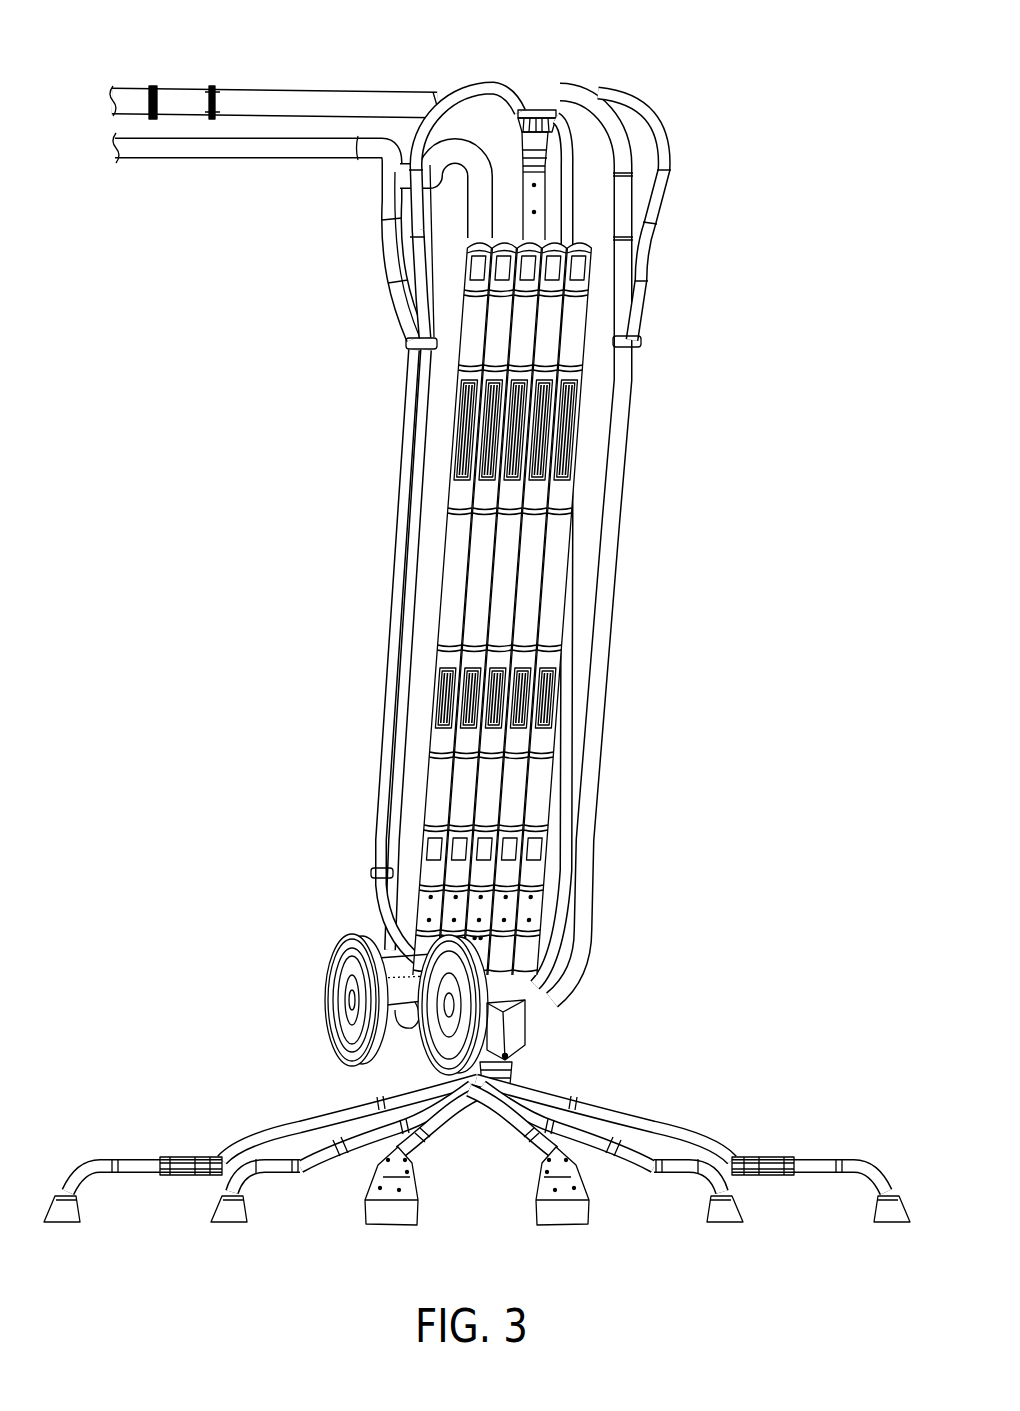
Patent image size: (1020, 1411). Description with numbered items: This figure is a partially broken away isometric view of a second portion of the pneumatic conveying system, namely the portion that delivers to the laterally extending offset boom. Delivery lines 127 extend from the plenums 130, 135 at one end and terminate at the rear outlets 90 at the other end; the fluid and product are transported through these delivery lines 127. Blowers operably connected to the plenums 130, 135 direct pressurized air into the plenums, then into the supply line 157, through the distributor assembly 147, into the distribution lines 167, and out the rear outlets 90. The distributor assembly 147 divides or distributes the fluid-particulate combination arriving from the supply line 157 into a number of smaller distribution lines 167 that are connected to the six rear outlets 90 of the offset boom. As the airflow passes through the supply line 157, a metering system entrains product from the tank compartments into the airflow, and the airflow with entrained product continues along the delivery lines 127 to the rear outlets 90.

The delivery lines 127 is at (550, 84).
The supply line 157 is at (480, 905).
The plenum 135 is at (413, 973).
The plenum 130 is at (512, 1024).
The distributor assembly 147 is at (502, 1055).
The distribution lines 167 is at (322, 1177).
The rear outlets 90 is at (215, 1207).